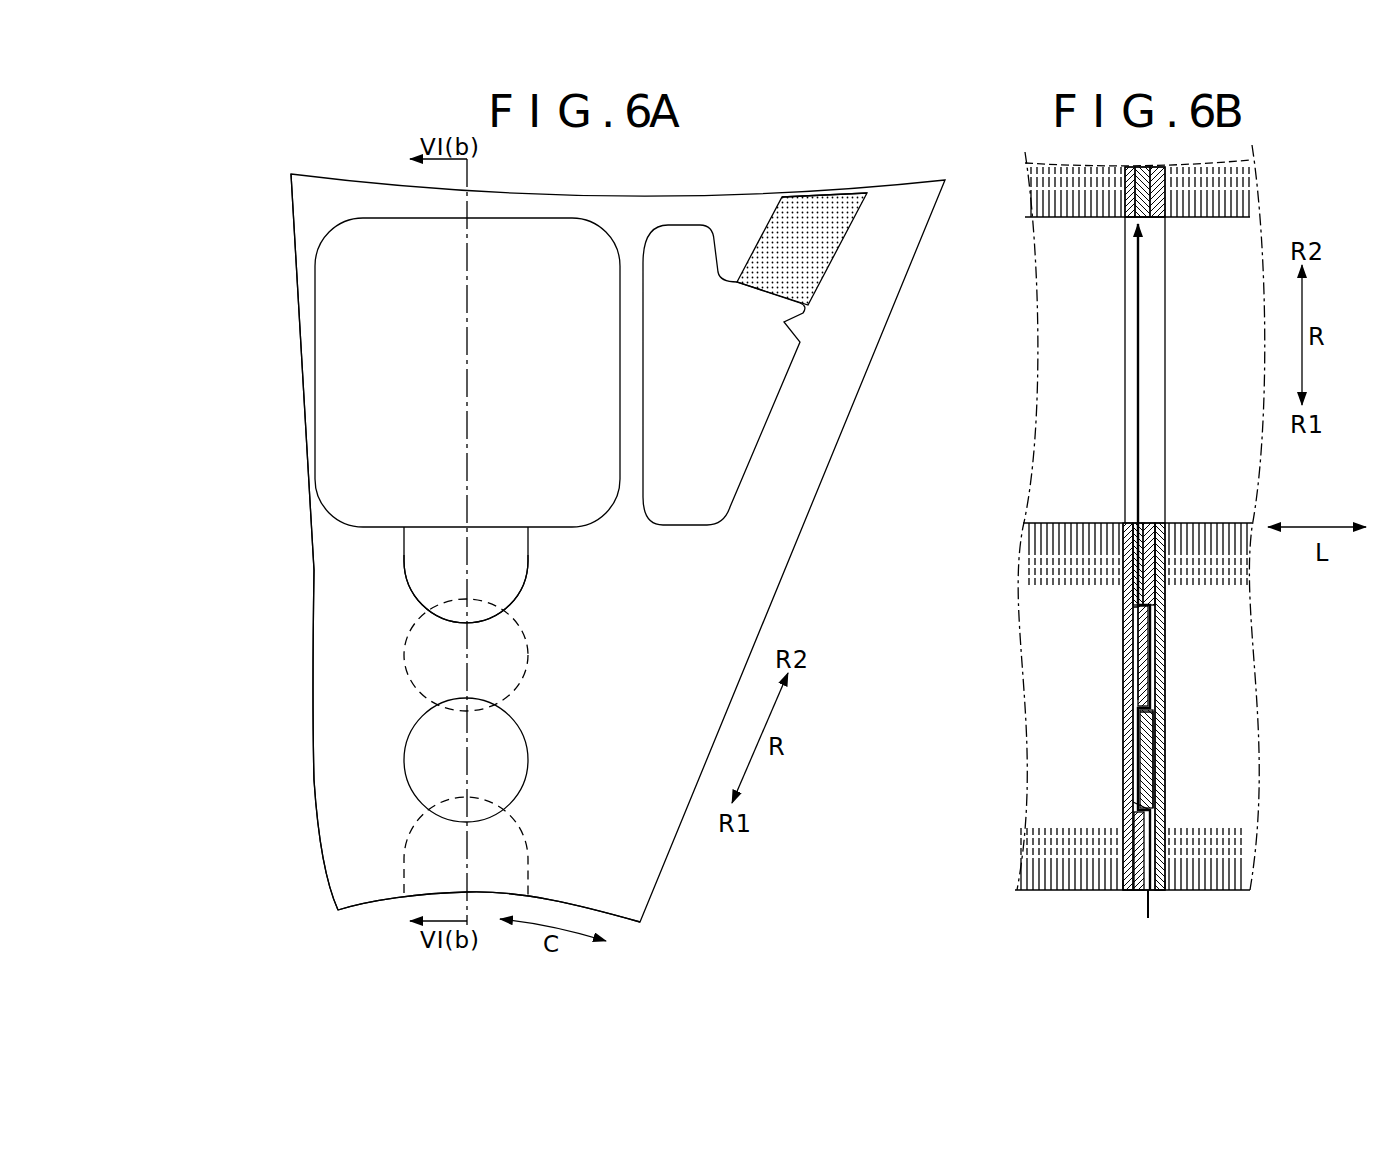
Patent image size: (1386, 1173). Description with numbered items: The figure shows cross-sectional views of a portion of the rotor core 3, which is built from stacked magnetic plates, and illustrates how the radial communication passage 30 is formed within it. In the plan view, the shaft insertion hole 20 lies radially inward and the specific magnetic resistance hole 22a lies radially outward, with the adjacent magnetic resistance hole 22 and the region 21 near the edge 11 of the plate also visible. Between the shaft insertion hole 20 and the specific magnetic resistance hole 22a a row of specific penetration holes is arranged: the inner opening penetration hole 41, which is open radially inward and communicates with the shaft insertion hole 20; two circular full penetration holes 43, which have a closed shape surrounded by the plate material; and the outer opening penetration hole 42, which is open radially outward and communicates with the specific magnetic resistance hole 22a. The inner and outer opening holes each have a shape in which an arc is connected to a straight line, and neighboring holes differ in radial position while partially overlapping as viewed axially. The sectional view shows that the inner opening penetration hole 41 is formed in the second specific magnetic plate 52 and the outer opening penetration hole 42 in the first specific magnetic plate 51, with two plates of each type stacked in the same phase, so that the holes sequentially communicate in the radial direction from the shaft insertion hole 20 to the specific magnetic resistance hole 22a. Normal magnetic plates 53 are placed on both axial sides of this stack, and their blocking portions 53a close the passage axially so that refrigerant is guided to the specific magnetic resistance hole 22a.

In FIG. 6A, the rotor core 3 is at (866, 400).
In FIG. 6B, the rotor core 3 is at (1280, 217).
In FIG. 6A, the opening edge 11 is at (767, 222).
In FIG. 6A, the shaft insertion hole 20 is at (613, 922).
In FIG. 6B, the shaft insertion hole 20 is at (1232, 890).
In FIG. 6A, the shaded region 21 is at (812, 256).
In FIG. 6A, the opening 22 is at (748, 462).
In FIG. 6A, the specific magnetic resistance hole 22a is at (316, 350).
In FIG. 6B, the specific magnetic resistance hole 22a is at (1148, 218).
In FIG. 6A, the radial communication passage 30 is at (383, 620).
In FIG. 6B, the radial communication passage 30 is at (1156, 717).
In FIG. 6A, the inner opening penetration hole 41 is at (503, 848).
In FIG. 6B, the inner opening penetration hole 41 is at (1156, 812).
In FIG. 6A, the outer opening penetration hole 42 is at (522, 572).
In FIG. 6B, the outer opening penetration hole 42 is at (1133, 620).
In FIG. 6A, the full penetration hole 43 is at (508, 660).
In FIG. 6B, the full penetration hole 43 is at (1152, 607).
In FIG. 6A, the first specific magnetic plate 51 is at (328, 773).
In FIG. 6B, the first specific magnetic plate 51 is at (1139, 893).
In FIG. 6B, the second specific magnetic plate 52 is at (1156, 523).
In FIG. 6B, the normal magnetic plate 53 is at (1050, 527).
In FIG. 6B, the blocking portion 53a is at (1168, 657).